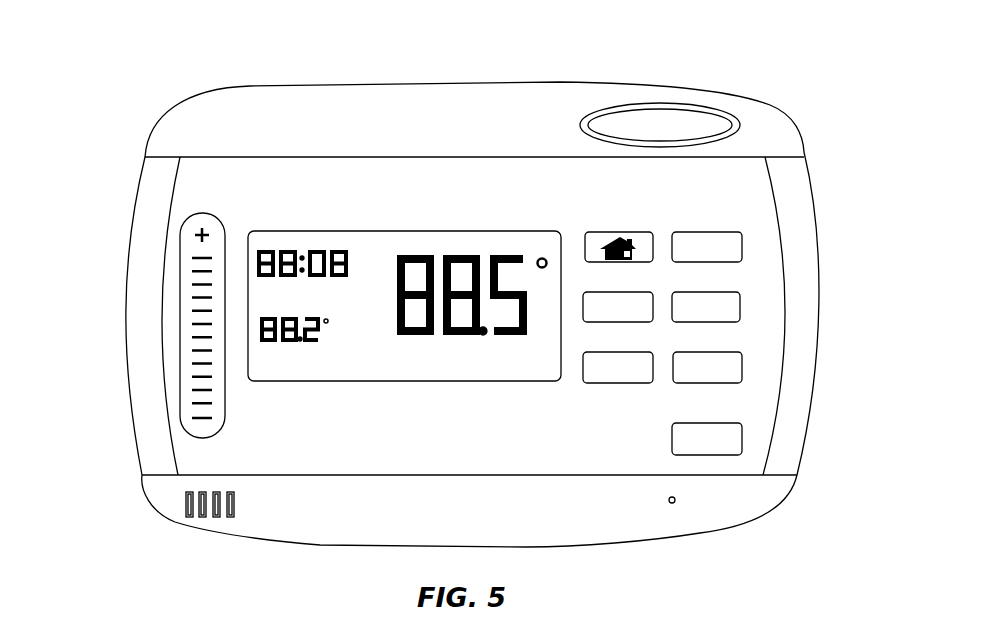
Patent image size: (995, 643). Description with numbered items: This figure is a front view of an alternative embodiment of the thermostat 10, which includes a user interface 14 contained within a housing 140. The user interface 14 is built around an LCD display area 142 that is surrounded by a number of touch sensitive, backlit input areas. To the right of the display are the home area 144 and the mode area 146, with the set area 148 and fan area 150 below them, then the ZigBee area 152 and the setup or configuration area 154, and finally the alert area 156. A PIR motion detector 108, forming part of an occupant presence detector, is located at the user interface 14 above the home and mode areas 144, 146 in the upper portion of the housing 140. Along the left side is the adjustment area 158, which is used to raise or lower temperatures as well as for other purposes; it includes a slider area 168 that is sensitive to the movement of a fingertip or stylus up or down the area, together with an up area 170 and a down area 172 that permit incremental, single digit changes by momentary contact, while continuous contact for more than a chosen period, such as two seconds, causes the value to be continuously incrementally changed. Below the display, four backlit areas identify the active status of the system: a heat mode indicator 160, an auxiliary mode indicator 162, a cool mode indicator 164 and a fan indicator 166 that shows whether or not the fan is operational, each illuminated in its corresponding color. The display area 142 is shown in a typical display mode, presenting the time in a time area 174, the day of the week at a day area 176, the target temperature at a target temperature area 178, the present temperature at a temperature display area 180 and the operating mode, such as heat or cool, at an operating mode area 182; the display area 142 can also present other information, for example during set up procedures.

The thermostat 10 is at (792, 34).
The user interface 14 is at (756, 191).
The PIR motion detector 108 is at (658, 125).
The housing 140 is at (766, 98).
The LCD display area 142 is at (402, 226).
The home area 144 is at (627, 232).
The mode area 146 is at (723, 232).
The set area 148 is at (627, 291).
The fan area 150 is at (717, 291).
The ZigBee area 152 is at (625, 351).
The setup area 154 is at (718, 351).
The alert area 156 is at (672, 438).
The adjustment area 158 is at (180, 338).
The heat mode indicator 160 is at (283, 476).
The auxiliary mode indicator 162 is at (368, 477).
The cool mode indicator 164 is at (440, 474).
The fan indicator 166 is at (520, 474).
The slider area 168 is at (193, 298).
The up area 170 is at (193, 228).
The down area 172 is at (193, 418).
The time area 174 is at (320, 247).
The day area 176 is at (257, 293).
The target temperature area 178 is at (257, 337).
The temperature display area 180 is at (427, 342).
The operating mode area 182 is at (527, 373).